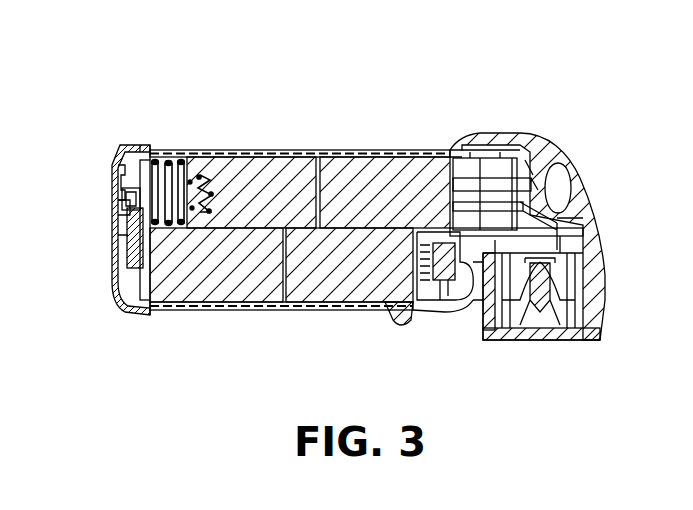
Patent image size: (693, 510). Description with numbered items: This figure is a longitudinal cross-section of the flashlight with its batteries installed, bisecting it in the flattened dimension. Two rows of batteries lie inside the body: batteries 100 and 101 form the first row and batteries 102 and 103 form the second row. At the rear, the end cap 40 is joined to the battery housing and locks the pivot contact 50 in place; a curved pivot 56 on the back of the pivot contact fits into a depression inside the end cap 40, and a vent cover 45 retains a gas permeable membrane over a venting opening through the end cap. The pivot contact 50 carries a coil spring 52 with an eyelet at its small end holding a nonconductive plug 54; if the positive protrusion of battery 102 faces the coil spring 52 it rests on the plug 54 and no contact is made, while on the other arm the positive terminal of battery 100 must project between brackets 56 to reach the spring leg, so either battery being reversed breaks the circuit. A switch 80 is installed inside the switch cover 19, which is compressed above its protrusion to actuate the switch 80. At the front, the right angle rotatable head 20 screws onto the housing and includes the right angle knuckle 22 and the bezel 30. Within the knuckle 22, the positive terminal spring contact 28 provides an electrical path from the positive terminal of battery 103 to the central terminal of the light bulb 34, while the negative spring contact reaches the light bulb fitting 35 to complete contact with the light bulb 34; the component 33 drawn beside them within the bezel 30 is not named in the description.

The switch cover 19 is at (401, 330).
The right angle rotatable head 20 is at (563, 157).
The right angle knuckle 22 is at (541, 155).
The positive terminal spring contact 28 is at (580, 218).
The bezel 30 is at (605, 300).
The valve member 33 is at (578, 342).
The light bulb 34 is at (538, 342).
The light bulb fitting 35 is at (500, 342).
The end cap 40 is at (112, 272).
The vent cover 45 is at (107, 197).
The pivot contact 50 is at (133, 253).
The coil spring 52 is at (163, 160).
The plug 54 is at (202, 175).
The curved pivot / bracket 56 is at (110, 217).
The switch 80 is at (447, 300).
The battery 100 is at (204, 287).
The battery 101 is at (330, 293).
The battery 102 is at (255, 163).
The battery 103 is at (381, 163).